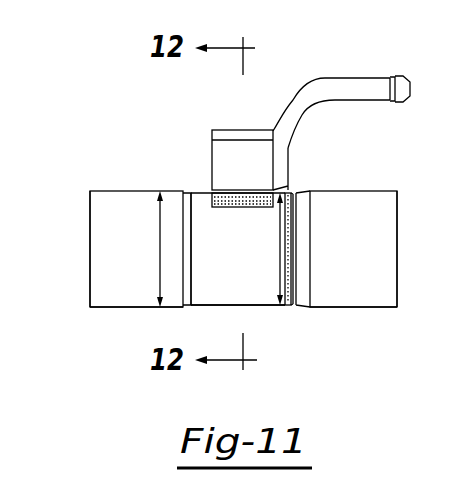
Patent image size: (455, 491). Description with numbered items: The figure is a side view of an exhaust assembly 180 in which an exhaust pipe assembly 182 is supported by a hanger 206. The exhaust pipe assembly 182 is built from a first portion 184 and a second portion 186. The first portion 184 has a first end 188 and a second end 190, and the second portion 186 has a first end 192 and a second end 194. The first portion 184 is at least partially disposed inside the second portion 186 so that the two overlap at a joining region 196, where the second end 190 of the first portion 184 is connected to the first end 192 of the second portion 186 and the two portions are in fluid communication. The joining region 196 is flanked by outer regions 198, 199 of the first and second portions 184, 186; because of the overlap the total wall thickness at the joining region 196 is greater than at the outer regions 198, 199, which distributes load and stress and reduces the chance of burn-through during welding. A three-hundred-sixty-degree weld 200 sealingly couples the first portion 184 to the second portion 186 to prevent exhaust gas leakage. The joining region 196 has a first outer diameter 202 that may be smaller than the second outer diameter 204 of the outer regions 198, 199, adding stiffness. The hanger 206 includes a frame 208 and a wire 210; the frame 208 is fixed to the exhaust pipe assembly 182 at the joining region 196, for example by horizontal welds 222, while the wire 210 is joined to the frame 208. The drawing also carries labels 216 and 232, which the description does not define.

The exhaust assembly 180 is at (130, 87).
The exhaust pipe assembly 182 is at (237, 193).
The first portion 184 is at (370, 198).
The second portion 186 is at (129, 202).
The first end 188 is at (378, 299).
The second end 190 is at (209, 290).
The first end 192 is at (261, 298).
The second end 194 is at (105, 313).
The joining region 196 is at (210, 239).
The outer region 198 is at (381, 236).
The outer region 199 is at (114, 237).
The 360° weld 200 is at (291, 258).
The first outer diameter 202 is at (280, 266).
The second outer diameter 204 is at (160, 268).
The hanger 206 is at (336, 81).
The frame 208 is at (255, 167).
The wire 210 is at (366, 85).
The hose bend 216 is at (302, 122).
The horizontal welds 222 is at (272, 207).
The fluid path 232 is at (453, 320).